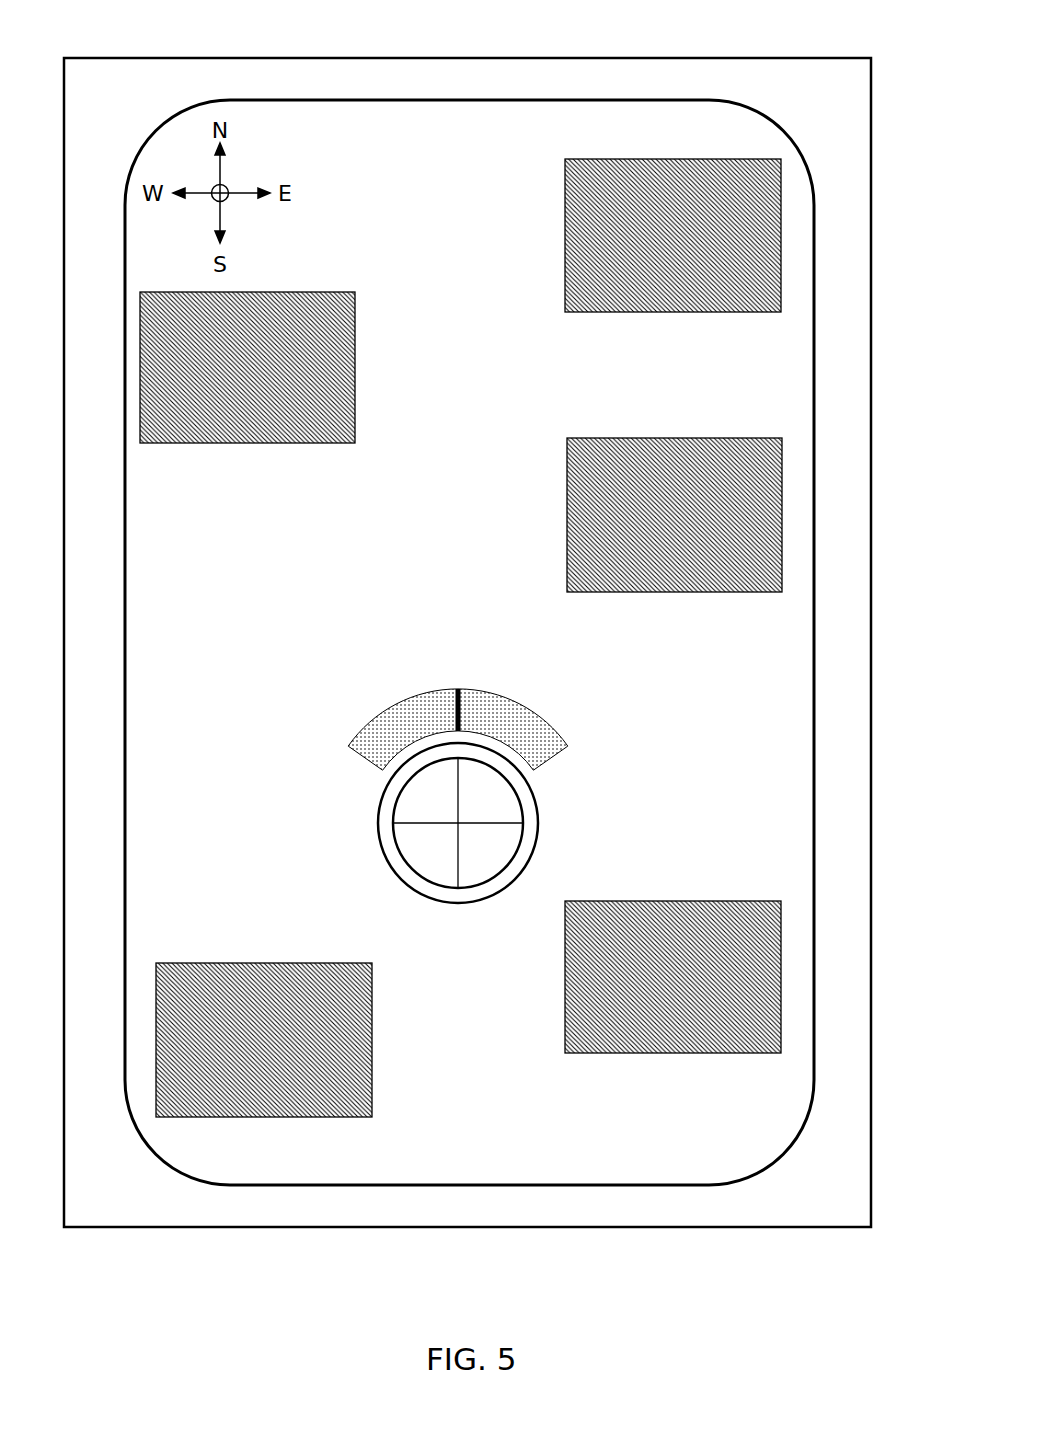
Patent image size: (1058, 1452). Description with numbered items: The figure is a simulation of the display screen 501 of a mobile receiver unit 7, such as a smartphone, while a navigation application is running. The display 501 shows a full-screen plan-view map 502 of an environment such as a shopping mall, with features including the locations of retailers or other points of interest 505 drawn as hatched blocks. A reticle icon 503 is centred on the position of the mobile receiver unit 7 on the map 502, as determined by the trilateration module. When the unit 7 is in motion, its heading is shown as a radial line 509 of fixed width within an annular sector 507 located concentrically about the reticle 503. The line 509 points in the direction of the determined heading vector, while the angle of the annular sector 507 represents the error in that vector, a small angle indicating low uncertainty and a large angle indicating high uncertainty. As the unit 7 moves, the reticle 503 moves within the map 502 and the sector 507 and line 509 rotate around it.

The mobile receiver unit 7 is at (871, 488).
The display screen 501 is at (345, 100).
The plan-view map 502 is at (662, 1118).
The reticle icon 503 is at (378, 822).
The points of interest 505 is at (565, 290).
The annular sector 507 is at (560, 733).
The radial line 509 is at (455, 712).